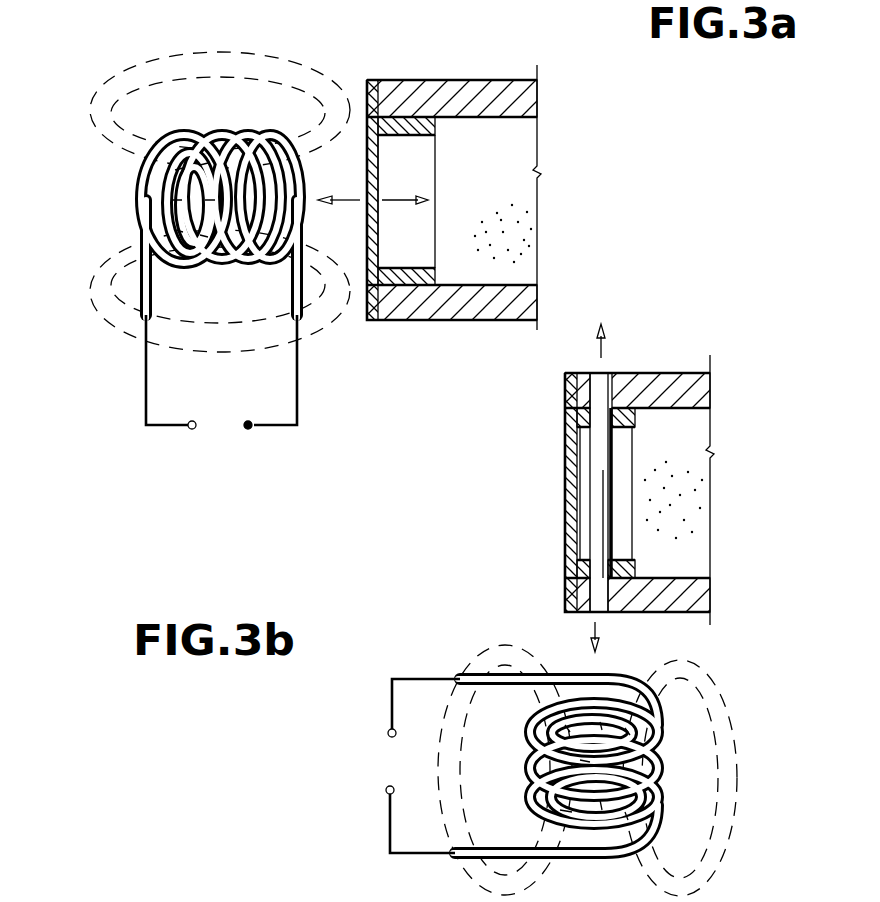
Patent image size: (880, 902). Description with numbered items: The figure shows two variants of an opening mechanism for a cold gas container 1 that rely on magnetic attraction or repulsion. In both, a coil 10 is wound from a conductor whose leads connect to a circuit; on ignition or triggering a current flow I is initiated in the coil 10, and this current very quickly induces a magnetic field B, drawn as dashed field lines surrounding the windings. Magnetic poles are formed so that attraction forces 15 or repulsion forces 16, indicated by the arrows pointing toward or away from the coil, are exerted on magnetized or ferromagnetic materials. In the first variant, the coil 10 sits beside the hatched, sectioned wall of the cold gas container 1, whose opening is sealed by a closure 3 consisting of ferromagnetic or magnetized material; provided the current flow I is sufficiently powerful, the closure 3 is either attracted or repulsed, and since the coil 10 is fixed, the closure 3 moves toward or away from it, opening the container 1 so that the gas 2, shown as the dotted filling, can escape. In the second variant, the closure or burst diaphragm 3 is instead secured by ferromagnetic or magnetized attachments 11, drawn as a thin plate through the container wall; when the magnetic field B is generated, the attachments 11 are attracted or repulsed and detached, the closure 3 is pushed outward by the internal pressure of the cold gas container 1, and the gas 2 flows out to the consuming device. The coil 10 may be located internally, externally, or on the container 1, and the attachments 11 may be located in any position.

In FIG. 3A, the cold gas container 1 is at (448, 72).
In FIG. 3B, the cold gas container 1 is at (676, 364).
In FIG. 3A, the gas 2 is at (512, 237).
In FIG. 3B, the gas 2 is at (692, 495).
In FIG. 3A, the closure (burst diaphragm) 3 is at (407, 276).
In FIG. 3B, the closure (burst diaphragm) 3 is at (618, 553).
In FIG. 3A, the coil 10 is at (140, 201).
In FIG. 3B, the coil 10 is at (660, 775).
In FIG. 3B, the ferromagnetic or magnetized attachments 11 is at (620, 453).
In FIG. 3A, the attraction forces 15 is at (342, 204).
In FIG. 3B, the attraction forces 15 is at (602, 647).
In FIG. 3A, the repulsion forces 16 is at (420, 186).
In FIG. 3B, the repulsion forces 16 is at (618, 341).
In FIG. 3A, the magnetic field B is at (200, 50).
In FIG. 3B, the magnetic field B is at (733, 701).
In FIG. 3A, the current flow I is at (140, 452).
In FIG. 3B, the current flow I is at (375, 733).